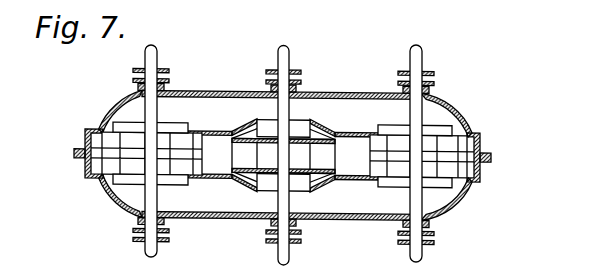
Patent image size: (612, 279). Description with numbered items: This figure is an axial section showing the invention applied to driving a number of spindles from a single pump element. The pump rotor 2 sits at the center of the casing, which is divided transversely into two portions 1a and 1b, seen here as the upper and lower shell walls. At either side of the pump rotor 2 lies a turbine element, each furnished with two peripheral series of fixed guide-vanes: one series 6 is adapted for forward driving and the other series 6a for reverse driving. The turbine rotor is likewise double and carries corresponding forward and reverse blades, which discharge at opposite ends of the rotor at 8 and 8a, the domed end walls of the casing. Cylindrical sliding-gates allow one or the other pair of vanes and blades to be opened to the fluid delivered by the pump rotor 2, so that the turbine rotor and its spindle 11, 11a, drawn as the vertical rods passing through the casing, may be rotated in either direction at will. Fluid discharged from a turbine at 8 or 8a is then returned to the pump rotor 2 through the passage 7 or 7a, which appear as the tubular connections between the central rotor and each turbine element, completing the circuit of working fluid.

The casing portion 1a is at (338, 95).
The casing portion 1b is at (357, 222).
The pump rotor 2 is at (283, 155).
The fixed guide-vanes for forward driving 6 is at (157, 140).
The fixed guide-vanes for reverse driving 6a is at (394, 176).
The return passage 7 is at (284, 124).
The return passage 7a is at (284, 191).
The turbine discharge 8 is at (122, 117).
The turbine discharge 8a is at (472, 211).
The spindle 11 is at (157, 57).
The spindle 11a is at (435, 251).